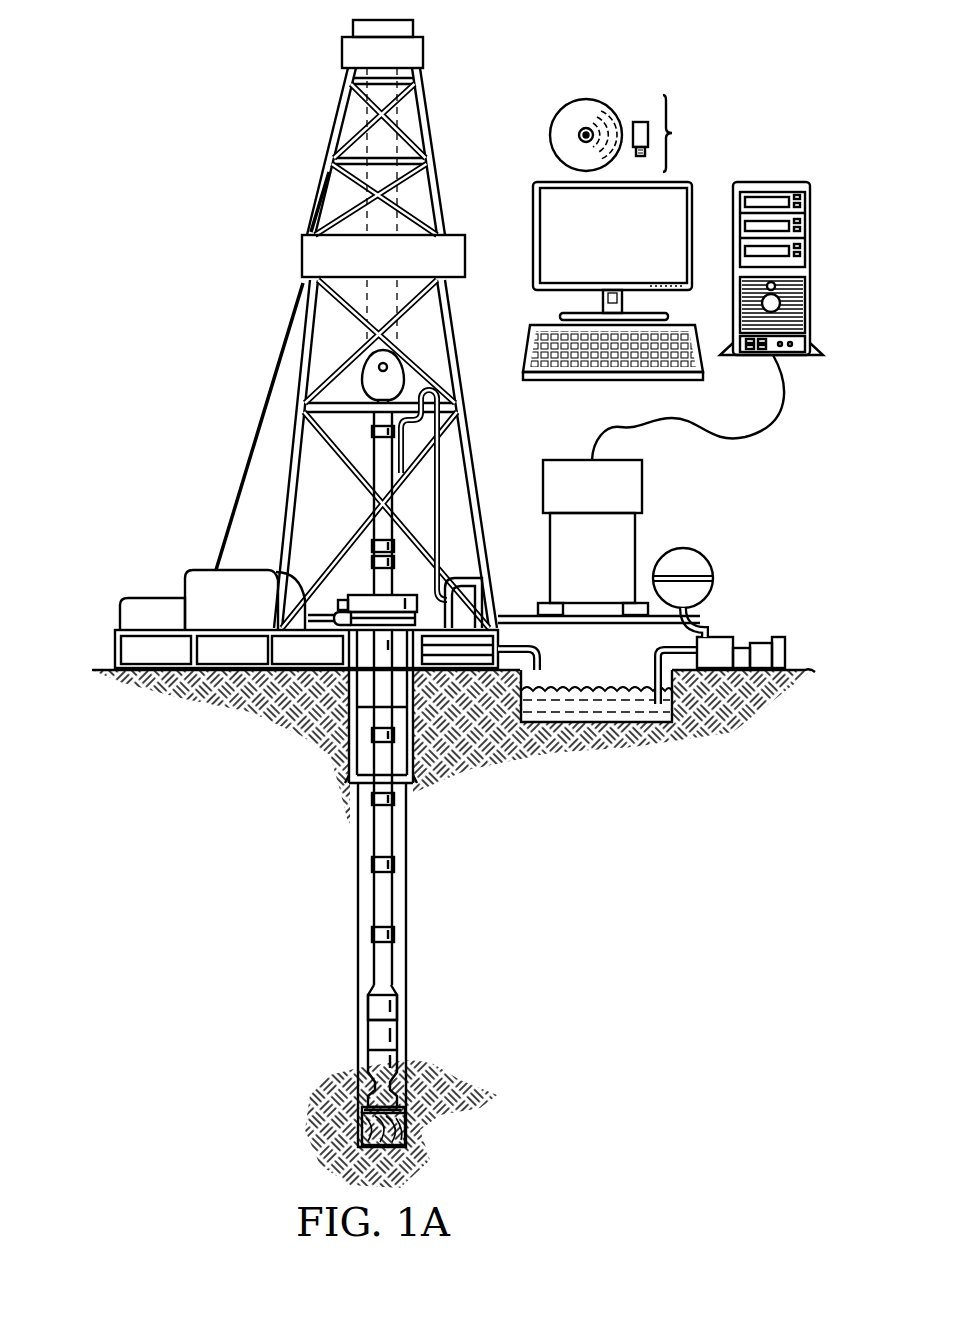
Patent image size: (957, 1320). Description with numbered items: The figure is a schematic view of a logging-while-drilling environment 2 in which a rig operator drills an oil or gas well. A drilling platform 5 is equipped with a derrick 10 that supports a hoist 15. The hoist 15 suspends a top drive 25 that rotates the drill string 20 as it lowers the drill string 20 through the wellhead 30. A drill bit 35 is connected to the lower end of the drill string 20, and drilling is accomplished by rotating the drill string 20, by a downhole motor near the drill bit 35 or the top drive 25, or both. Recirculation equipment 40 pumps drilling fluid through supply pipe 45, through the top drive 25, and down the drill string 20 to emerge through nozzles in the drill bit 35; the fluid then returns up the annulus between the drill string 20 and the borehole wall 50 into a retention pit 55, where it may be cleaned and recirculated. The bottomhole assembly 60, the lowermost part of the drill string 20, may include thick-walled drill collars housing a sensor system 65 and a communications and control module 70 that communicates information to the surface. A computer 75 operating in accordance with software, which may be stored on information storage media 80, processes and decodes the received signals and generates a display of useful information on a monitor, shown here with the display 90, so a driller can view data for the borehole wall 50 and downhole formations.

The logging-while-drilling environment 2 is at (226, 80).
The drilling platform 5 is at (113, 651).
The derrick 10 is at (437, 152).
The hoist 15 is at (370, 387).
The drill string 20 is at (393, 830).
The top drive 25 is at (370, 470).
The wellhead 30 is at (358, 594).
The drill bit 35 is at (403, 1115).
The recirculation equipment 40 is at (760, 640).
The supply pipe 45 is at (551, 669).
The borehole wall 50 is at (407, 850).
The retention pit 55 is at (598, 694).
The bottomhole assembly 60 is at (482, 1003).
The sensor system 65 is at (376, 1040).
The communications and control module 70 is at (376, 1005).
The computer 75 is at (812, 274).
The information storage media 80 is at (631, 133).
The display 90 is at (628, 252).